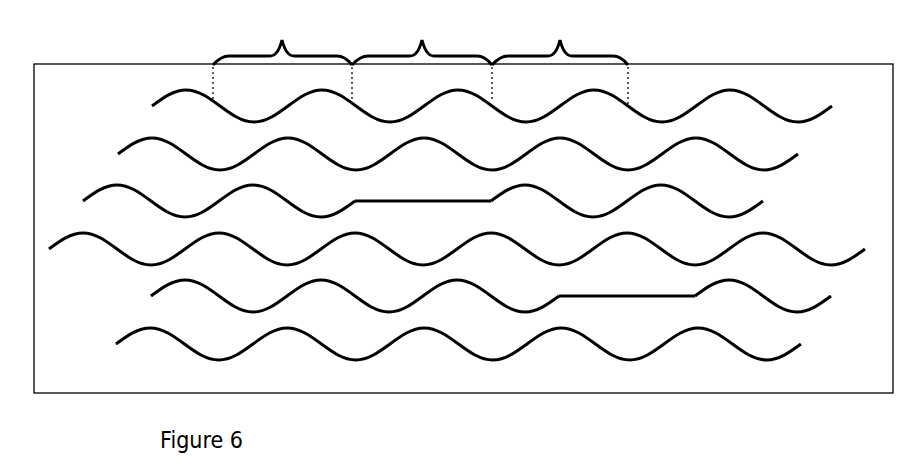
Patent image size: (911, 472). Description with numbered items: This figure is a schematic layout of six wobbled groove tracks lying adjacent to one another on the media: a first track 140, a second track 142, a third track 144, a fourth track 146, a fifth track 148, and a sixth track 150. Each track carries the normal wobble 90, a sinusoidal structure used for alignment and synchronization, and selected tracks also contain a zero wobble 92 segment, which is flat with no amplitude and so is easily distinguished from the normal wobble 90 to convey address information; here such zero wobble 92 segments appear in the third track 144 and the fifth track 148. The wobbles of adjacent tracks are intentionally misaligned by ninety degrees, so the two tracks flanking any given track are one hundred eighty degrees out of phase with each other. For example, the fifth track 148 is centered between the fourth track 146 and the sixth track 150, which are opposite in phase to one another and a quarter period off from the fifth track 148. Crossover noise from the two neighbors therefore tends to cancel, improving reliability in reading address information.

The normal wobble signal 90 is at (420, 60).
The zero wobble signal 92 is at (445, 201).
The first track 140 is at (177, 91).
The second track 142 is at (145, 136).
The third track 144 is at (127, 185).
The fourth track 146 is at (130, 262).
The fifth track 148 is at (195, 283).
The sixth track 150 is at (192, 347).